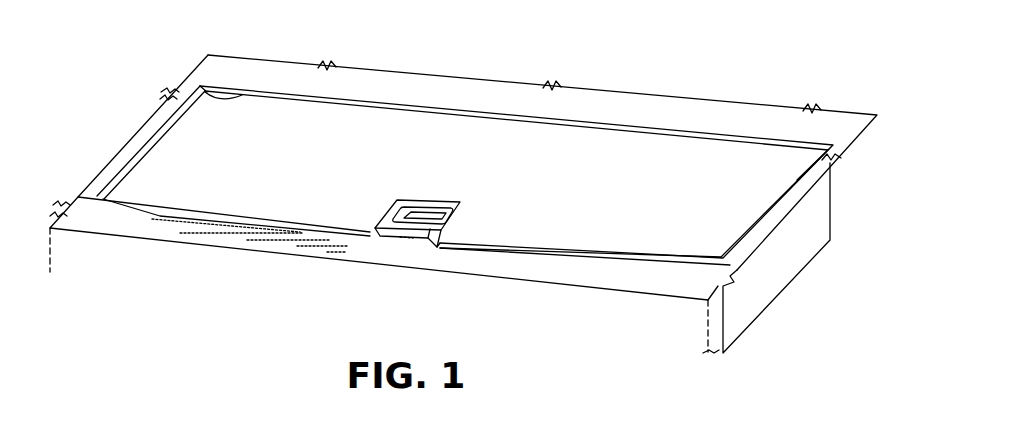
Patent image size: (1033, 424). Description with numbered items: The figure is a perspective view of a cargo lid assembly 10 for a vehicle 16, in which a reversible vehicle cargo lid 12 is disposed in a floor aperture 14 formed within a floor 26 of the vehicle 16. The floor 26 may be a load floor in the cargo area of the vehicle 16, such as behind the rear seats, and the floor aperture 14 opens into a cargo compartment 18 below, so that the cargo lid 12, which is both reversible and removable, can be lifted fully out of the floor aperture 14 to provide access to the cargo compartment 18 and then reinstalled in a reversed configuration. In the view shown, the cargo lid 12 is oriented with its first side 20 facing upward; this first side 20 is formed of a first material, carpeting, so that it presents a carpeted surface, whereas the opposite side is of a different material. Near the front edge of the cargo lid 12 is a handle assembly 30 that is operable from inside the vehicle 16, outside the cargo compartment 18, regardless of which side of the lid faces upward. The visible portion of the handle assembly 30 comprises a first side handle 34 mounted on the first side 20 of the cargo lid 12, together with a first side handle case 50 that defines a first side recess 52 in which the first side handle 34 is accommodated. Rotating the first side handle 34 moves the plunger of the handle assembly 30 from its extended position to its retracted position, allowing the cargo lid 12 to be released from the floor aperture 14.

The cargo lid assembly 10 is at (463, 189).
The cargo lid 12 is at (693, 160).
The floor aperture 14 is at (200, 89).
The vehicle 16 is at (755, 305).
The cargo compartment 18 is at (763, 272).
The first side 20 is at (565, 177).
The floor 26 is at (415, 88).
The handle assembly 30 is at (390, 237).
The first side handle 34 is at (428, 226).
The first side handle case 50 is at (459, 215).
The first side recess 52 is at (432, 208).